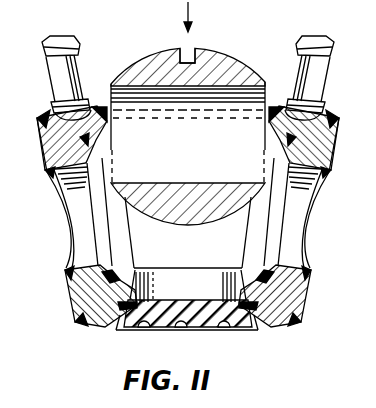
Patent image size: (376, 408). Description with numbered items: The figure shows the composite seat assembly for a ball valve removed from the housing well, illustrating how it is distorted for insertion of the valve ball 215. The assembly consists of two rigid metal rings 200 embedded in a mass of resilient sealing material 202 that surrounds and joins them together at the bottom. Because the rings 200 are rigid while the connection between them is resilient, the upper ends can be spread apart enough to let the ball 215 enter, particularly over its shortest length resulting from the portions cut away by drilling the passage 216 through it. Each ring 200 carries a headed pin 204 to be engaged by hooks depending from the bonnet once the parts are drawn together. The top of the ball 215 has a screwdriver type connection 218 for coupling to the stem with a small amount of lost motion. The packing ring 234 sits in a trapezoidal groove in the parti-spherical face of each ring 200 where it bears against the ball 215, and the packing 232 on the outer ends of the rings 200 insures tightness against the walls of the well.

The metal rings 200 is at (63, 153).
The resilient sealing material 202 is at (189, 282).
The headed pins 204 is at (76, 83).
The valve ball 215 is at (150, 63).
The through-bore of the valve ball 216 is at (198, 150).
The screwdriver type connection 218 is at (192, 44).
The packing 232 is at (68, 299).
The packing material 234 is at (118, 283).